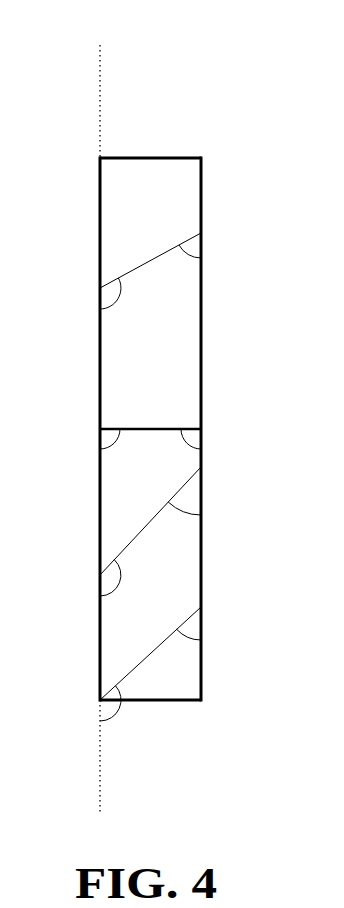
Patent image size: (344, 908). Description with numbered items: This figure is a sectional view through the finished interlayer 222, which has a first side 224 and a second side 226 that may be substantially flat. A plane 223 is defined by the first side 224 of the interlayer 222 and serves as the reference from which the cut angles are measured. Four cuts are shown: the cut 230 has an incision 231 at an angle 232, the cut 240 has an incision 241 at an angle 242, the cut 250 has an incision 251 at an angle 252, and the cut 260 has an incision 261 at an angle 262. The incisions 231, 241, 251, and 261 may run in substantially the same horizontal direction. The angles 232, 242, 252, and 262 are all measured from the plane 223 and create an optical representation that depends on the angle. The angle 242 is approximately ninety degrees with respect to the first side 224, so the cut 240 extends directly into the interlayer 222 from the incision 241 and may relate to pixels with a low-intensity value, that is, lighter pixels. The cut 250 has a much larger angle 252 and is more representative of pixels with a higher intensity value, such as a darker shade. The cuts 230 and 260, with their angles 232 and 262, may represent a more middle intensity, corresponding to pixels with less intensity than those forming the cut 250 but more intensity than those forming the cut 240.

The interlayer 222 is at (178, 158).
The plane 223 is at (100, 73).
The first side 224 is at (100, 222).
The second side 226 is at (202, 211).
The cut 230 is at (201, 265).
The incision 231 is at (100, 288).
The angle 232 is at (121, 297).
The cut 240 is at (201, 451).
The incision 241 is at (100, 429).
The angle 242 is at (118, 443).
The cut 250 is at (201, 517).
The incision 251 is at (100, 575).
The angle 252 is at (121, 577).
The cut 260 is at (201, 643).
The incision 261 is at (100, 700).
The angle 262 is at (120, 706).